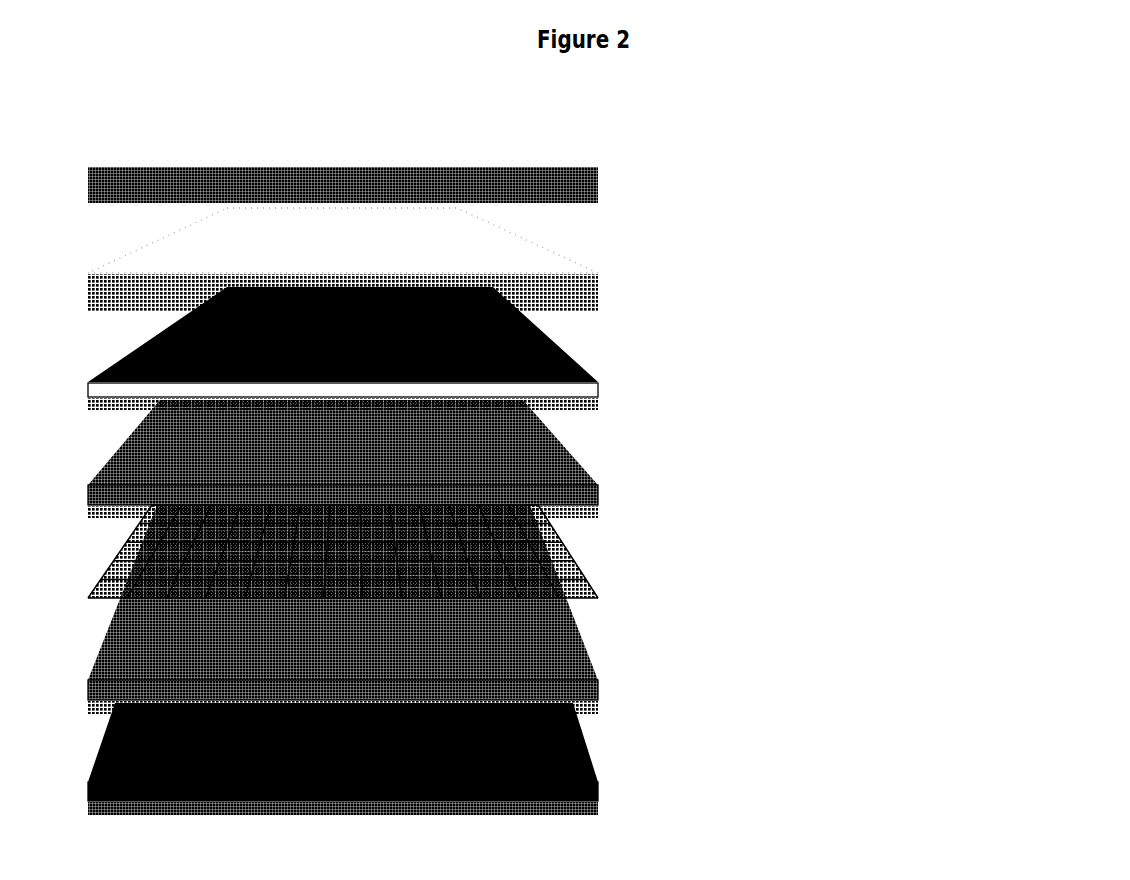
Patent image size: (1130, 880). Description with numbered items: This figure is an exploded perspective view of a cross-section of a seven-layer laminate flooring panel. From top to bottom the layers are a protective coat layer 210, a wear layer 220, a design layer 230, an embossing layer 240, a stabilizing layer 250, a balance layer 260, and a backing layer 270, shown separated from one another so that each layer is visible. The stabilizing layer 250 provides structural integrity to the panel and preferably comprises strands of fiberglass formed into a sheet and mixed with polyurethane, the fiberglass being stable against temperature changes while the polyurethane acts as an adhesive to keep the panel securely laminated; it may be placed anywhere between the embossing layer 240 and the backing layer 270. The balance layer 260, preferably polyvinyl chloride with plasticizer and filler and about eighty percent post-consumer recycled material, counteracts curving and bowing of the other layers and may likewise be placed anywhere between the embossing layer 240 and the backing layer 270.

The protective coat layer 210 is at (610, 180).
The wear layer 220 is at (610, 287).
The design layer 230 is at (610, 392).
The embossing layer 240 is at (610, 495).
The stabilizing layer 250 is at (610, 592).
The balance layer 260 is at (610, 692).
The backing layer 270 is at (610, 795).